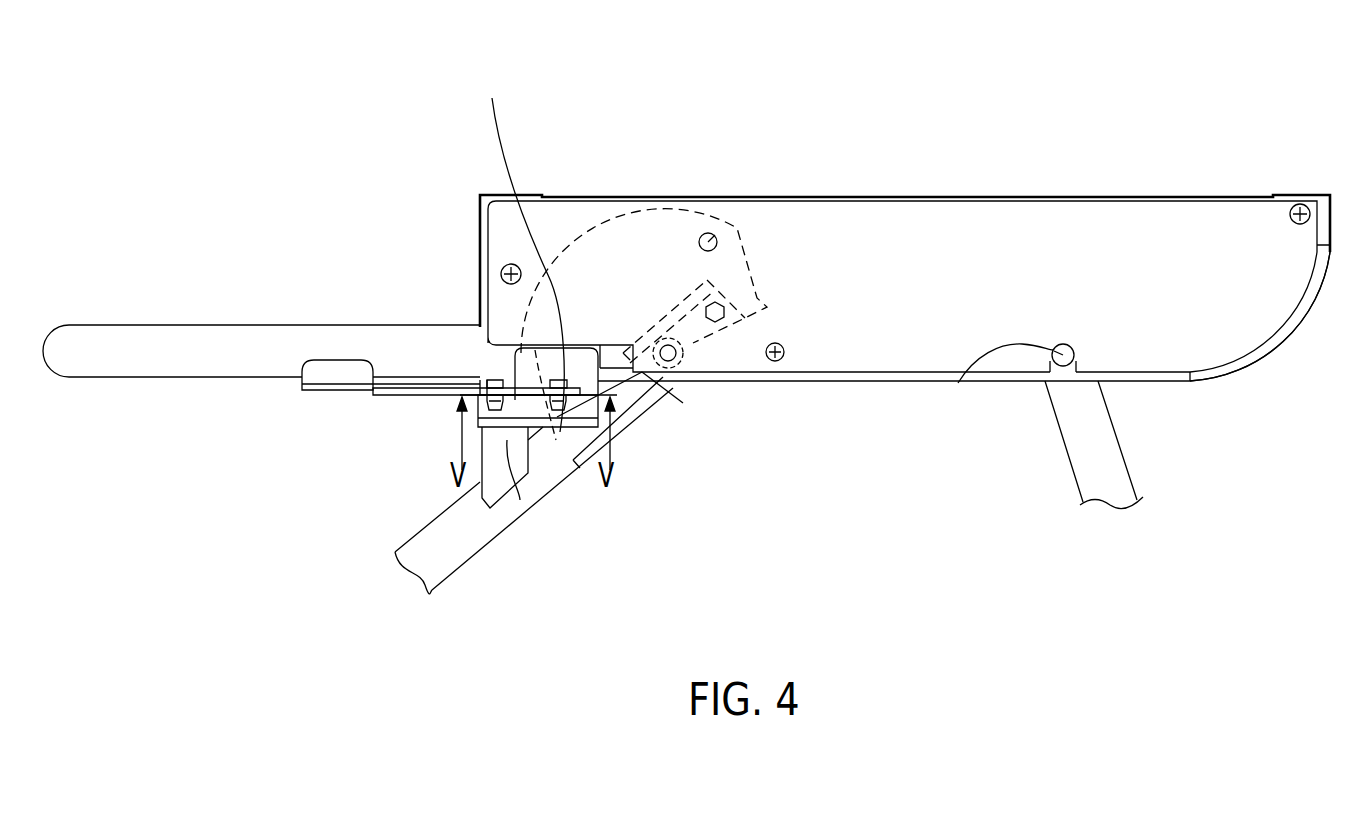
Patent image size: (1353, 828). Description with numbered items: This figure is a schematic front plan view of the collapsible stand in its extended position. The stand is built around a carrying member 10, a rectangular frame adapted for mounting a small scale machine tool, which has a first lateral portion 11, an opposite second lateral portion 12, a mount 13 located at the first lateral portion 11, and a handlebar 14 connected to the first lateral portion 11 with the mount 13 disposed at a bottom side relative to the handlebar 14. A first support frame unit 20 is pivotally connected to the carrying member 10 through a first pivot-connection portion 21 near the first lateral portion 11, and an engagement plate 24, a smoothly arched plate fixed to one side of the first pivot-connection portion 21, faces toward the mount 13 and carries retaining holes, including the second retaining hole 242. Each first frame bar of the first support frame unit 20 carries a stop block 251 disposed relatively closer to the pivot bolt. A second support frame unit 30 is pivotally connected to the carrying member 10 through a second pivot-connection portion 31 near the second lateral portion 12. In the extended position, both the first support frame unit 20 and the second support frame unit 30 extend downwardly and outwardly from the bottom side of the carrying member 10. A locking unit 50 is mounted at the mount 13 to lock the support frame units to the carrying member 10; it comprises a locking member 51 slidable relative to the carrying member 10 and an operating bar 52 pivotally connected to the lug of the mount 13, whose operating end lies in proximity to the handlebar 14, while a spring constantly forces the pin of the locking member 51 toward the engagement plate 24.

The carrying member 10 is at (906, 195).
The first lateral portion 11 is at (500, 250).
The second lateral portion 12 is at (1281, 338).
The mount 13 is at (561, 432).
The handlebar 14 is at (255, 325).
The first support frame unit 20 is at (452, 574).
The first pivot-connection portion 21 is at (672, 370).
The engagement plate 24 is at (591, 245).
The second retaining hole 242 is at (715, 236).
The stop block 251 is at (507, 442).
The second support frame unit 30 is at (1058, 436).
The second pivot-connection portion 31 is at (1052, 352).
The locking unit 50 is at (424, 397).
The locking member 51 is at (497, 251).
The operating bar 52 is at (393, 393).